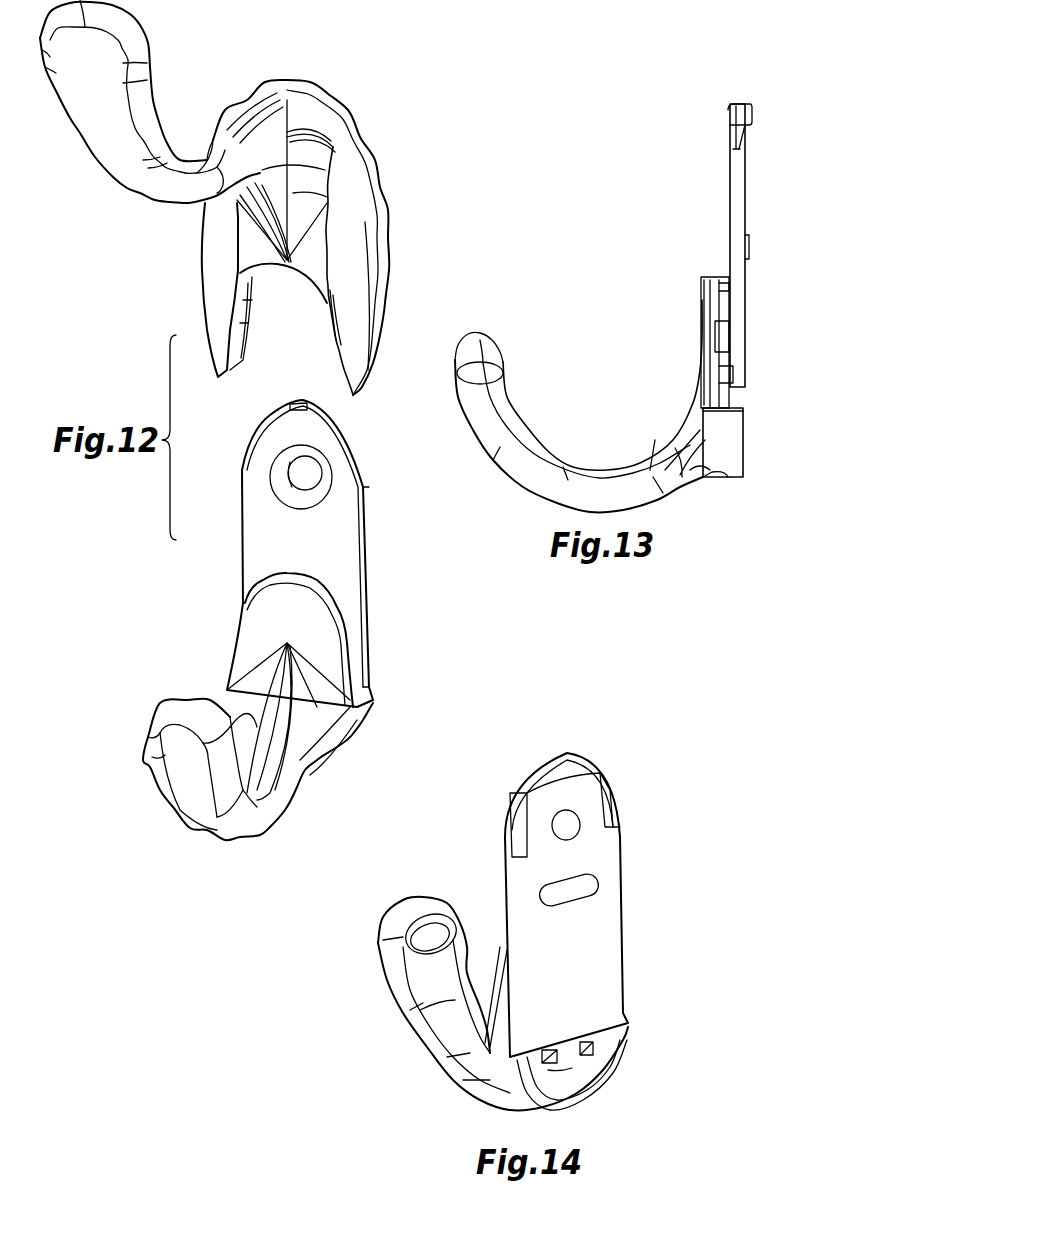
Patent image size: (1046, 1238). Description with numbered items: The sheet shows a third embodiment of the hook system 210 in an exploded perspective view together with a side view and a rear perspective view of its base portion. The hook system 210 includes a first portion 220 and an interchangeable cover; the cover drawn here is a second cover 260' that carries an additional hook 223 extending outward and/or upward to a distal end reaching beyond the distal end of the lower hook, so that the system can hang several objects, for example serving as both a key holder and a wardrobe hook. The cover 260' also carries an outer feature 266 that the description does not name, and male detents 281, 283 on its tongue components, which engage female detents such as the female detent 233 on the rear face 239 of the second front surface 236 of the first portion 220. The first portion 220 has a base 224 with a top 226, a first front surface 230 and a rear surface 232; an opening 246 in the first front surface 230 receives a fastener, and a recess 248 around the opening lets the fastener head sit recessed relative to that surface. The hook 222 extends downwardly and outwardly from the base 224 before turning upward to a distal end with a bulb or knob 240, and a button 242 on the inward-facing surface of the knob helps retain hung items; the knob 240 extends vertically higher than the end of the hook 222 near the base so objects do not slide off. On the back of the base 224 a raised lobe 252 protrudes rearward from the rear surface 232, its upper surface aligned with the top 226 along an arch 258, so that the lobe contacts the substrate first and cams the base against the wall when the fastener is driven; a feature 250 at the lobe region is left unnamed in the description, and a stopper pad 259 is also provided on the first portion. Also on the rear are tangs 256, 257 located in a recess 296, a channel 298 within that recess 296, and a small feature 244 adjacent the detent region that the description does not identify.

In FIG. 12, the hook system 210 is at (258, 197).
In FIG. 12, the hook 223 is at (80, 88).
In FIG. 12, the second cover 260' is at (136, 216).
In FIG. 12, the outer shell 266 is at (350, 257).
In FIG. 12, the male detent 281 is at (247, 320).
In FIG. 12, the male detent 283 is at (333, 333).
In FIG. 12, the first portion 220 is at (261, 625).
In FIG. 12, the first front surface 230 is at (345, 555).
In FIG. 12, the recess 248 is at (283, 478).
In FIG. 12, the second front surface 236 is at (333, 625).
In FIG. 12, the bulb or knob 240 is at (175, 757).
In FIG. 13, the hook 222 is at (568, 391).
In FIG. 14, the hook 222 is at (433, 993).
In FIG. 13, the base 224 is at (777, 265).
In FIG. 13, the top 226 is at (738, 104).
In FIG. 13, the stopper pad 259 is at (750, 245).
In FIG. 14, the stopper pad 259 is at (585, 890).
In FIG. 13, the tab 244 is at (716, 283).
In FIG. 13, the female detent 233 is at (714, 328).
In FIG. 13, the rear face 239 is at (722, 376).
In FIG. 13, the tang 256 is at (764, 462).
In FIG. 14, the tang 256 is at (575, 1097).
In FIG. 13, the arch 258 is at (728, 477).
In FIG. 13, the button 242 is at (503, 355).
In FIG. 14, the raised lobe 252 is at (580, 760).
In FIG. 14, the cap edge 250 is at (615, 800).
In FIG. 14, the opening 246 is at (575, 832).
In FIG. 14, the rear surface 232 is at (604, 866).
In FIG. 14, the tang 257 is at (595, 1052).
In FIG. 14, the recess 296 is at (563, 1063).
In FIG. 14, the channel 298 is at (583, 1087).